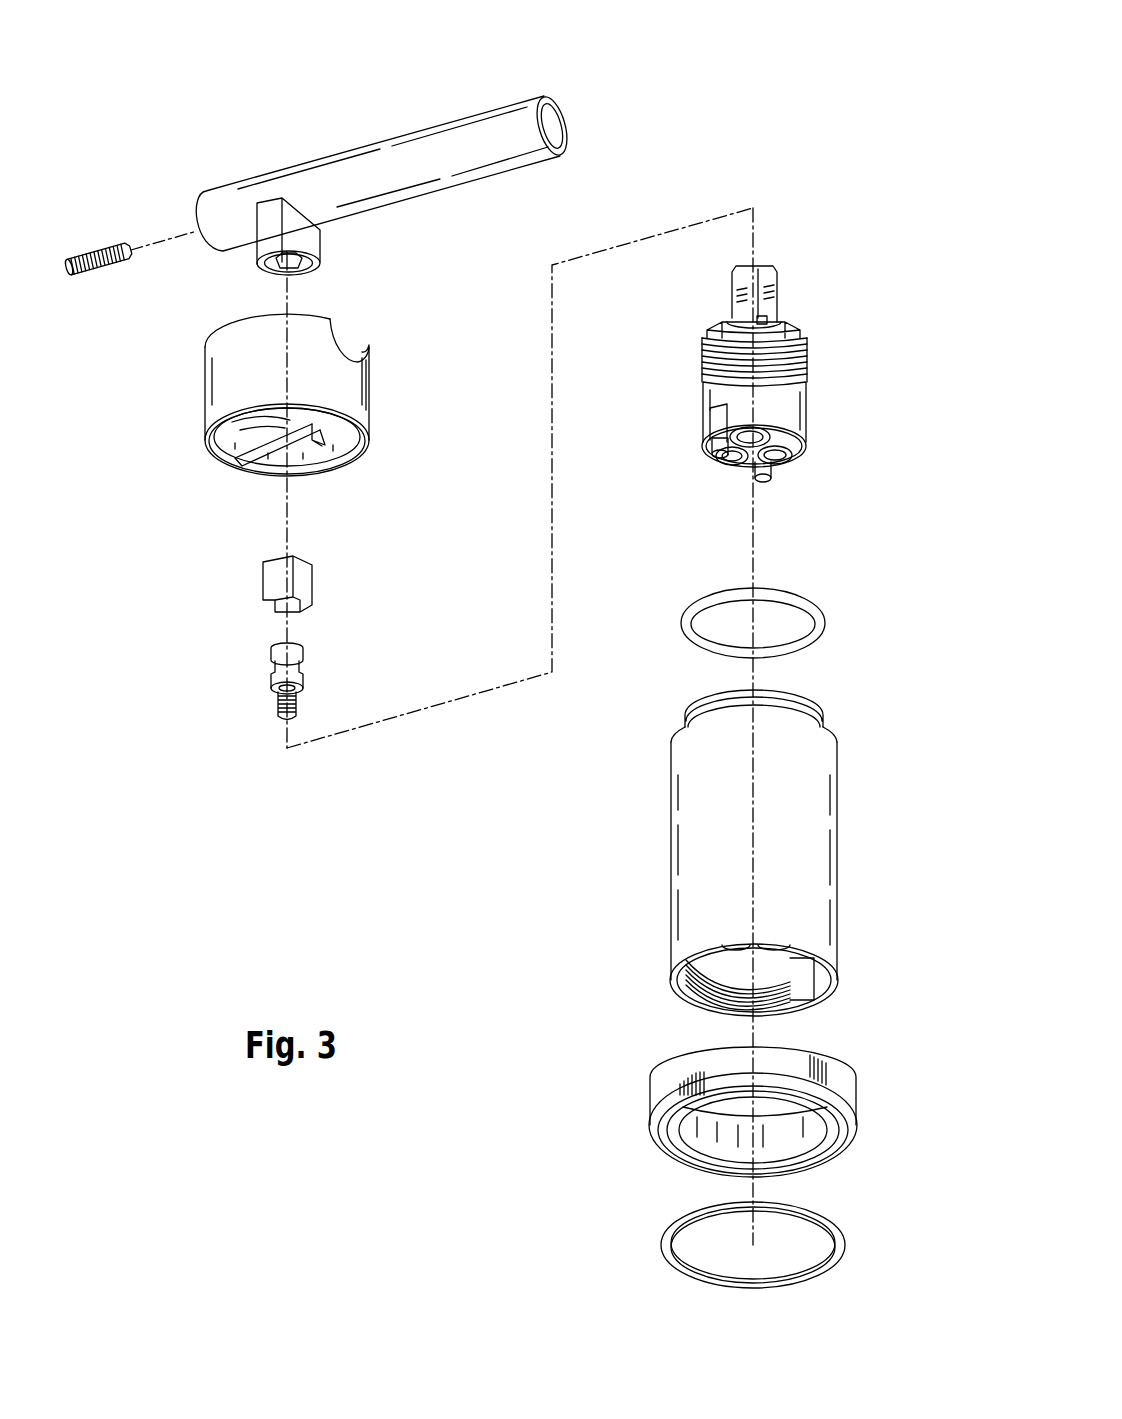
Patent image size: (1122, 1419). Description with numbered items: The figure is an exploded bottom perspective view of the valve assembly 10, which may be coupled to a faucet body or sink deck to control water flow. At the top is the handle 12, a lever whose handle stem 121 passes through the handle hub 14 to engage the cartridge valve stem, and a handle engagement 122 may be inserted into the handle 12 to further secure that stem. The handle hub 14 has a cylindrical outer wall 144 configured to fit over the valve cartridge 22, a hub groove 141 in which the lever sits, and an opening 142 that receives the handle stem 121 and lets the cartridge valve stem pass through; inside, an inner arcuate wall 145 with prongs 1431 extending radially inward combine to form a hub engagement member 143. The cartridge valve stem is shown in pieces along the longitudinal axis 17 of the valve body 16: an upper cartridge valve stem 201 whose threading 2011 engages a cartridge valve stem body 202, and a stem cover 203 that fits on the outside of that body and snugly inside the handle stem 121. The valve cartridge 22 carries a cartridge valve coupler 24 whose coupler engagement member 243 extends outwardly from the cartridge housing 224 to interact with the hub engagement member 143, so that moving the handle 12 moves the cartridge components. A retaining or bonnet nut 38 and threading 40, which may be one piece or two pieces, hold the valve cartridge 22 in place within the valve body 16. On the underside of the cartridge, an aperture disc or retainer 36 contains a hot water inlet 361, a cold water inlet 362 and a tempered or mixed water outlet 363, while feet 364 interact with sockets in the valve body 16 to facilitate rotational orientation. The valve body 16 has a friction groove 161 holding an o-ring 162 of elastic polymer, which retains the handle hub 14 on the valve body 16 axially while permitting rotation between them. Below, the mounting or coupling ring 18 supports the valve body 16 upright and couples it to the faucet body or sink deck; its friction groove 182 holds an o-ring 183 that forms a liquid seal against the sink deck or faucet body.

The valve assembly 10 is at (832, 126).
The handle 12 is at (349, 143).
The handle stem 121 is at (243, 262).
The handle engagement 122 is at (96, 235).
The handle hub 14 is at (194, 387).
The hub groove 141 is at (350, 338).
The opening 142 is at (256, 482).
The hub engagement member 143 is at (327, 448).
The prongs 1431 is at (240, 463).
The cylindrical outer wall 144 is at (370, 386).
The inner arcuate wall 145 is at (362, 425).
The longitudinal axis 17 is at (552, 524).
The stem cover 203 is at (256, 585).
The upper cartridge valve stem 201 is at (314, 663).
The threading 2011 is at (274, 701).
The cartridge valve stem body 202 is at (838, 293).
The valve cartridge 22 is at (695, 394).
The cartridge valve coupler 24 is at (720, 318).
The coupler engagement member 243 is at (782, 320).
The retaining nut 38 is at (800, 330).
The threading 40 is at (700, 362).
The cartridge housing 224 is at (706, 414).
The aperture disc 36 is at (790, 458).
The hot water inlet 361 is at (775, 430).
The cold water inlet 362 is at (780, 462).
The mixed water outlet 363 is at (741, 468).
The feet 364 is at (720, 462).
The o-ring 162 is at (836, 617).
The valve body 16 is at (653, 858).
The friction groove 161 is at (815, 710).
The coupling ring 18 is at (868, 1118).
The friction groove 182 is at (665, 1130).
The o-ring 183 is at (856, 1258).